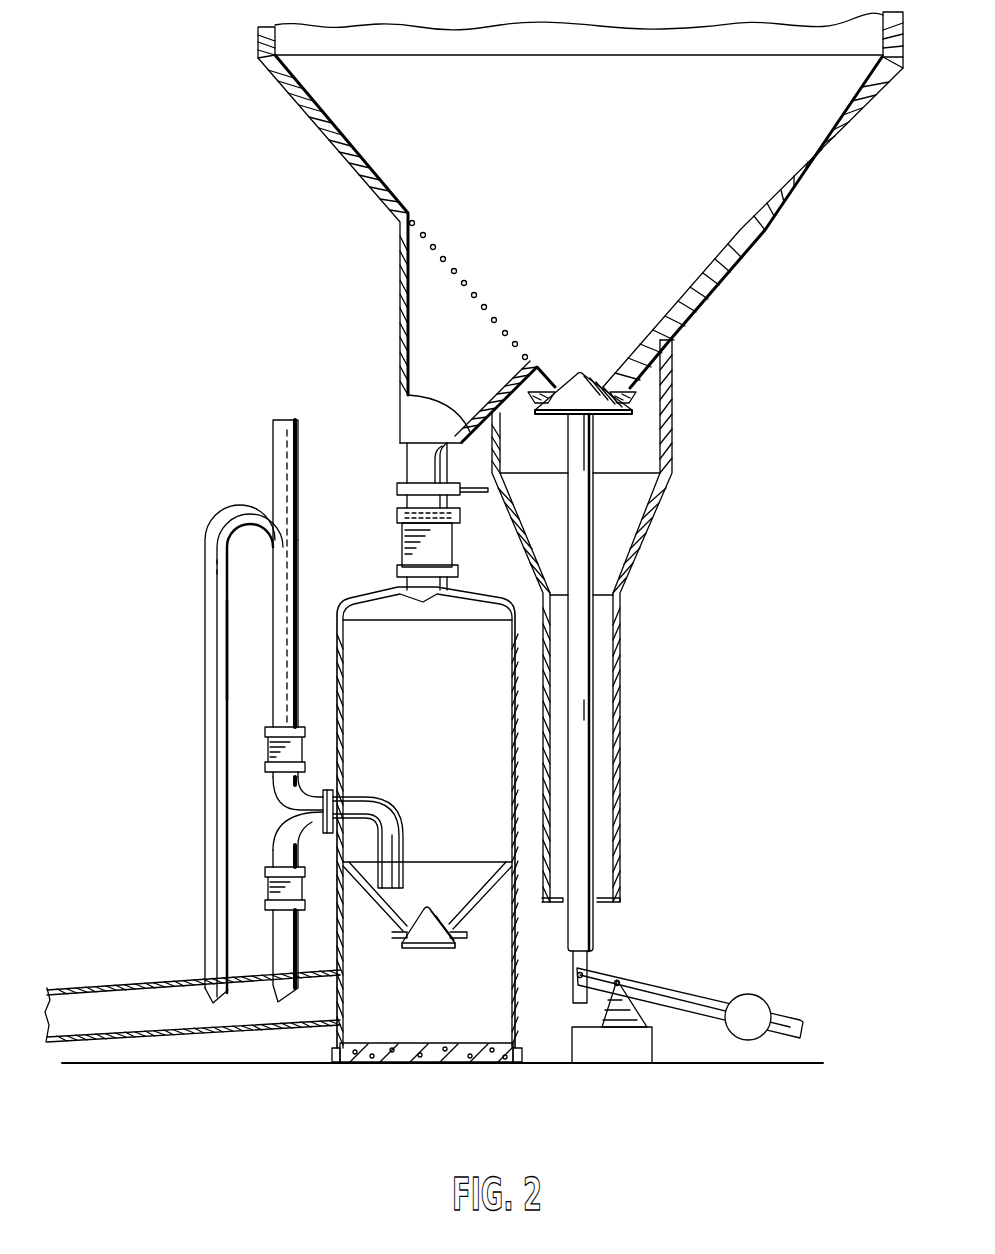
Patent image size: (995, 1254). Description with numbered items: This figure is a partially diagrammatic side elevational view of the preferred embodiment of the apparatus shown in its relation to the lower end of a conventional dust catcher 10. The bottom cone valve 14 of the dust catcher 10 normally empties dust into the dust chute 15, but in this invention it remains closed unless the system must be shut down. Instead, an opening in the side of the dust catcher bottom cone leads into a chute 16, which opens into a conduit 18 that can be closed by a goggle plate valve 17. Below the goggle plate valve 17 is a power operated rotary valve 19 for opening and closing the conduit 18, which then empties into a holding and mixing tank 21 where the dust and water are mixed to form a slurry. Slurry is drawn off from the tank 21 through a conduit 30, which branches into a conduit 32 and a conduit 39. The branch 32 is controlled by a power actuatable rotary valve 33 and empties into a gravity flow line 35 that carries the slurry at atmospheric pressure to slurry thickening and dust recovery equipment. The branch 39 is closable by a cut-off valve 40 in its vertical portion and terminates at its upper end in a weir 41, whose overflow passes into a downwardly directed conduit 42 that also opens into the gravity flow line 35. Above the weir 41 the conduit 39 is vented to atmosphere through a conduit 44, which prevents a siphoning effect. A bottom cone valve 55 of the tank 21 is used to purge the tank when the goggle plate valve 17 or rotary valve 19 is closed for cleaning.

The dust catcher 10 is at (571, 141).
The bottom cone valve 14 is at (589, 372).
The dust chute 15 is at (620, 648).
The chute 16 is at (423, 318).
The goggle plate valve 17 is at (397, 488).
The conduit 18 is at (412, 503).
The rotary valve 19 is at (445, 543).
The holding and mixing tank 21 is at (492, 592).
The conduit 30 is at (390, 823).
The branch conduit 32 is at (282, 827).
The rotary valve 33 is at (270, 888).
The gravity flow line 35 is at (121, 1019).
The branch conduit 39 is at (288, 575).
The cut-off valve 40 is at (272, 748).
The weir 41 is at (263, 528).
The downwardly directed conduit 42 is at (217, 698).
The vent conduit 44 is at (290, 448).
The bottom cone valve 55 is at (443, 948).